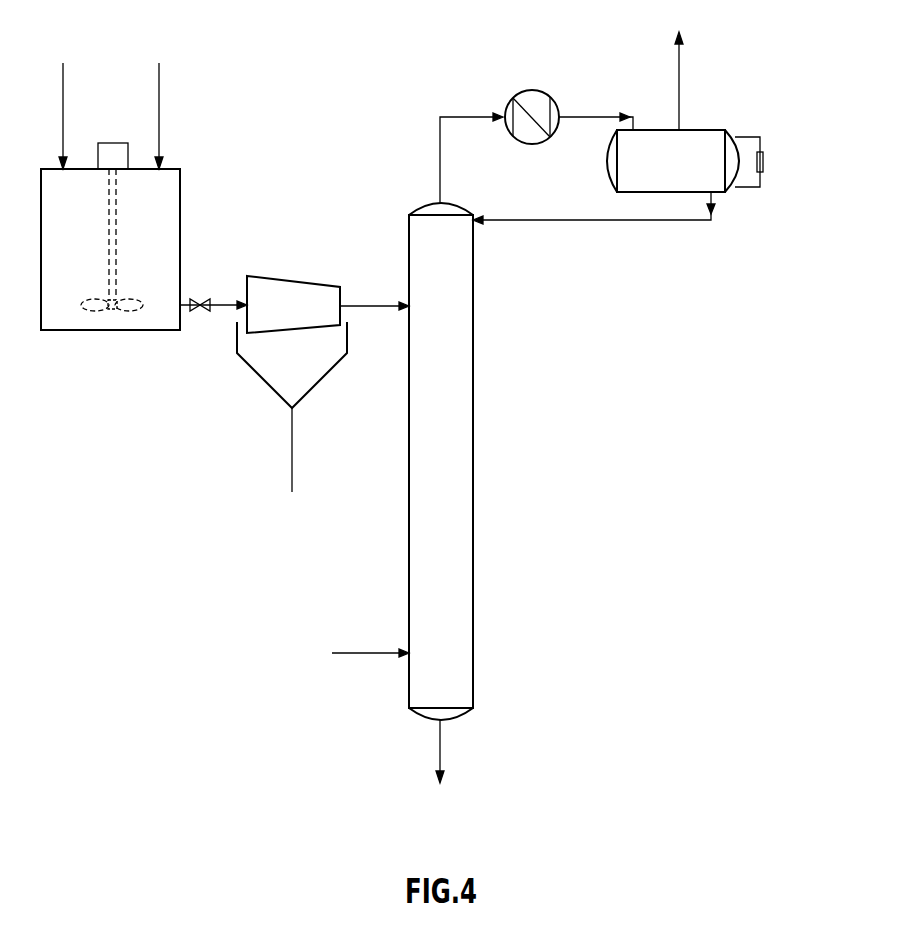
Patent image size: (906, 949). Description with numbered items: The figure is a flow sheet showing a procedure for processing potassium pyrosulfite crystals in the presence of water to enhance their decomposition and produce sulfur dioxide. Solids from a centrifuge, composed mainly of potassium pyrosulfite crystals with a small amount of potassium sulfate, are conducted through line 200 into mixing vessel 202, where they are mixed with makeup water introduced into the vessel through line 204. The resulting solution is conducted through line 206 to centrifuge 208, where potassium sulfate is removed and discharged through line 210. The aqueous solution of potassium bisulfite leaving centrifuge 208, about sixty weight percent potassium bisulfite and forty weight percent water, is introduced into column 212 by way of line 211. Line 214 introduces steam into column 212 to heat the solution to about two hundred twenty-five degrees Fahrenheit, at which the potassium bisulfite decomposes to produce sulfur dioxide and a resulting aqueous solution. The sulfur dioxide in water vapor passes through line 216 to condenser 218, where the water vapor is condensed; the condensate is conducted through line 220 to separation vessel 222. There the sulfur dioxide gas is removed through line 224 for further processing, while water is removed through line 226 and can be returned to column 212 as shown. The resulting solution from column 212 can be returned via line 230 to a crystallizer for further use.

The line 200 is at (159, 80).
The mixing vessel 202 is at (180, 243).
The line 204 is at (63, 80).
The line 206 is at (236, 292).
The centrifuge 208 is at (325, 268).
The line 210 is at (292, 448).
The line 211 is at (380, 302).
The column 212 is at (473, 412).
The line 214 is at (359, 641).
The line 216 is at (470, 100).
The condenser 218 is at (550, 92).
The line 220 is at (596, 117).
The separation vessel 222 is at (608, 157).
The line 224 is at (681, 95).
The line 226 is at (659, 226).
The line 230 is at (440, 730).